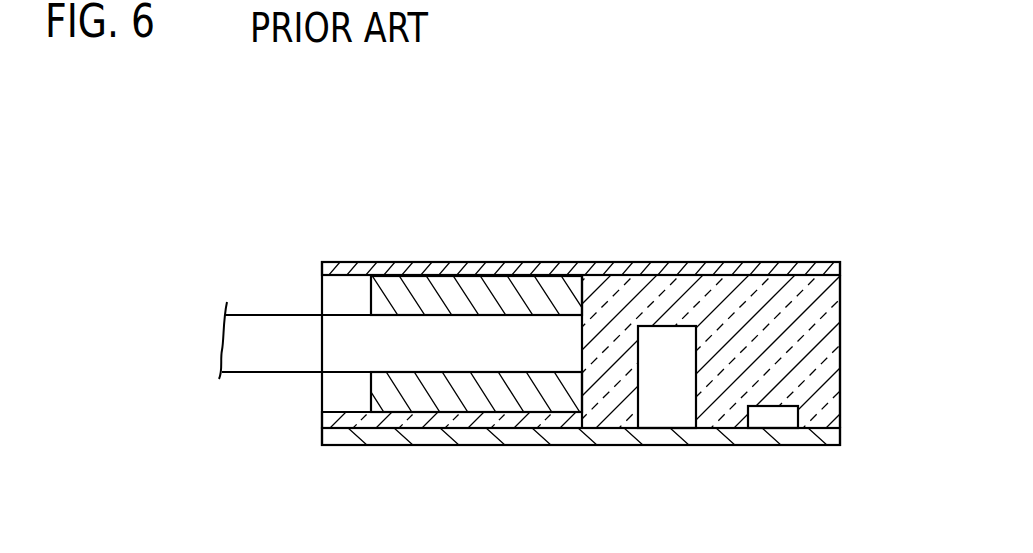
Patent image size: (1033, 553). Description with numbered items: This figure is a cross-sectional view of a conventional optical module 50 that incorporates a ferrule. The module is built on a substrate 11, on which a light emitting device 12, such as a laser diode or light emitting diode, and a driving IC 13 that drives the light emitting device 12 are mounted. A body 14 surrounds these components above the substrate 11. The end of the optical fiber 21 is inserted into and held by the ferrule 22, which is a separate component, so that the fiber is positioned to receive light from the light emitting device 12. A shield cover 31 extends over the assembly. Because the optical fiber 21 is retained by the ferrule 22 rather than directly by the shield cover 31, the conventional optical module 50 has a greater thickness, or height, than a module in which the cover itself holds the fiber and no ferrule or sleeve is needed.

The conventional optical module 50 is at (378, 146).
The substrate 11 is at (840, 433).
The light emitting device 12 is at (662, 418).
The driving IC 13 is at (784, 420).
The body 14 is at (840, 335).
The optical fiber 21 is at (270, 313).
The ferrule 22 is at (503, 293).
The shield cover 31 is at (765, 262).